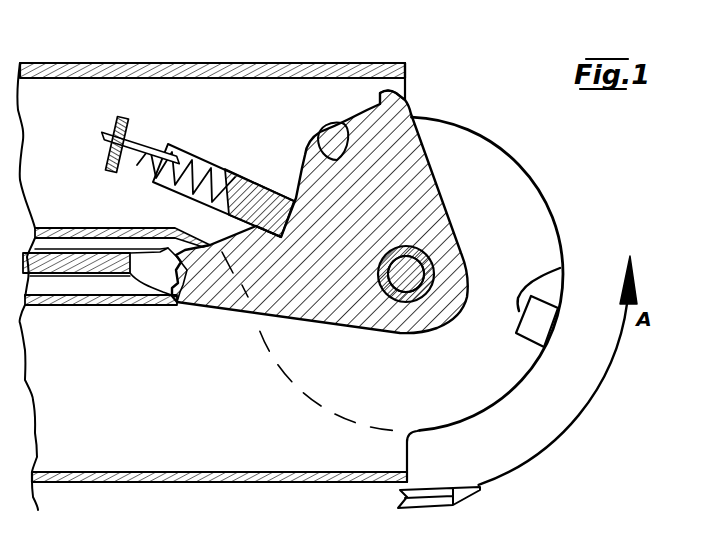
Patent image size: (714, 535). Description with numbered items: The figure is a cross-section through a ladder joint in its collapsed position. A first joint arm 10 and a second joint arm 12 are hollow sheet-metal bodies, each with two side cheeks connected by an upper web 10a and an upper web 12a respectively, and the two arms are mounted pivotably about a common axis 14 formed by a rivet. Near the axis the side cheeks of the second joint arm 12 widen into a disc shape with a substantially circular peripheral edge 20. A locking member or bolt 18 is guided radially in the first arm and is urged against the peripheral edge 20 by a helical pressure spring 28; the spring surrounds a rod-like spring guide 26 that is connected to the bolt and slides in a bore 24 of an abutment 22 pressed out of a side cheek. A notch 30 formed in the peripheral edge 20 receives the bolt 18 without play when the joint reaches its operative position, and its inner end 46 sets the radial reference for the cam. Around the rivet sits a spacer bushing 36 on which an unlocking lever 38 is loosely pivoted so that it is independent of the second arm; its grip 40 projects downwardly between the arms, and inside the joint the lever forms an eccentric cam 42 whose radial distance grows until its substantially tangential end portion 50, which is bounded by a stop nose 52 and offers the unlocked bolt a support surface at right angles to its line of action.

The first joint arm 10 is at (41, 80).
The upper web 10a is at (350, 63).
The second joint arm 12 is at (77, 457).
The upper web 12a is at (151, 477).
The common axis 14 is at (433, 258).
The locking member or bolt 18 is at (257, 182).
The peripheral edge 20 is at (542, 175).
The abutment 22 is at (116, 120).
The bore 24 is at (103, 141).
The spring guide 26 is at (138, 156).
The helical pressure spring 28 is at (191, 150).
The notch 30 is at (547, 325).
The spacer bushing 36 is at (432, 293).
The unlocking lever 38 is at (422, 196).
The grip 40 is at (98, 272).
The eccentric cam 42 is at (345, 125).
The inner end of notch 46 is at (560, 268).
The end portion of cam 50 is at (357, 113).
The stop nose 52 is at (407, 100).